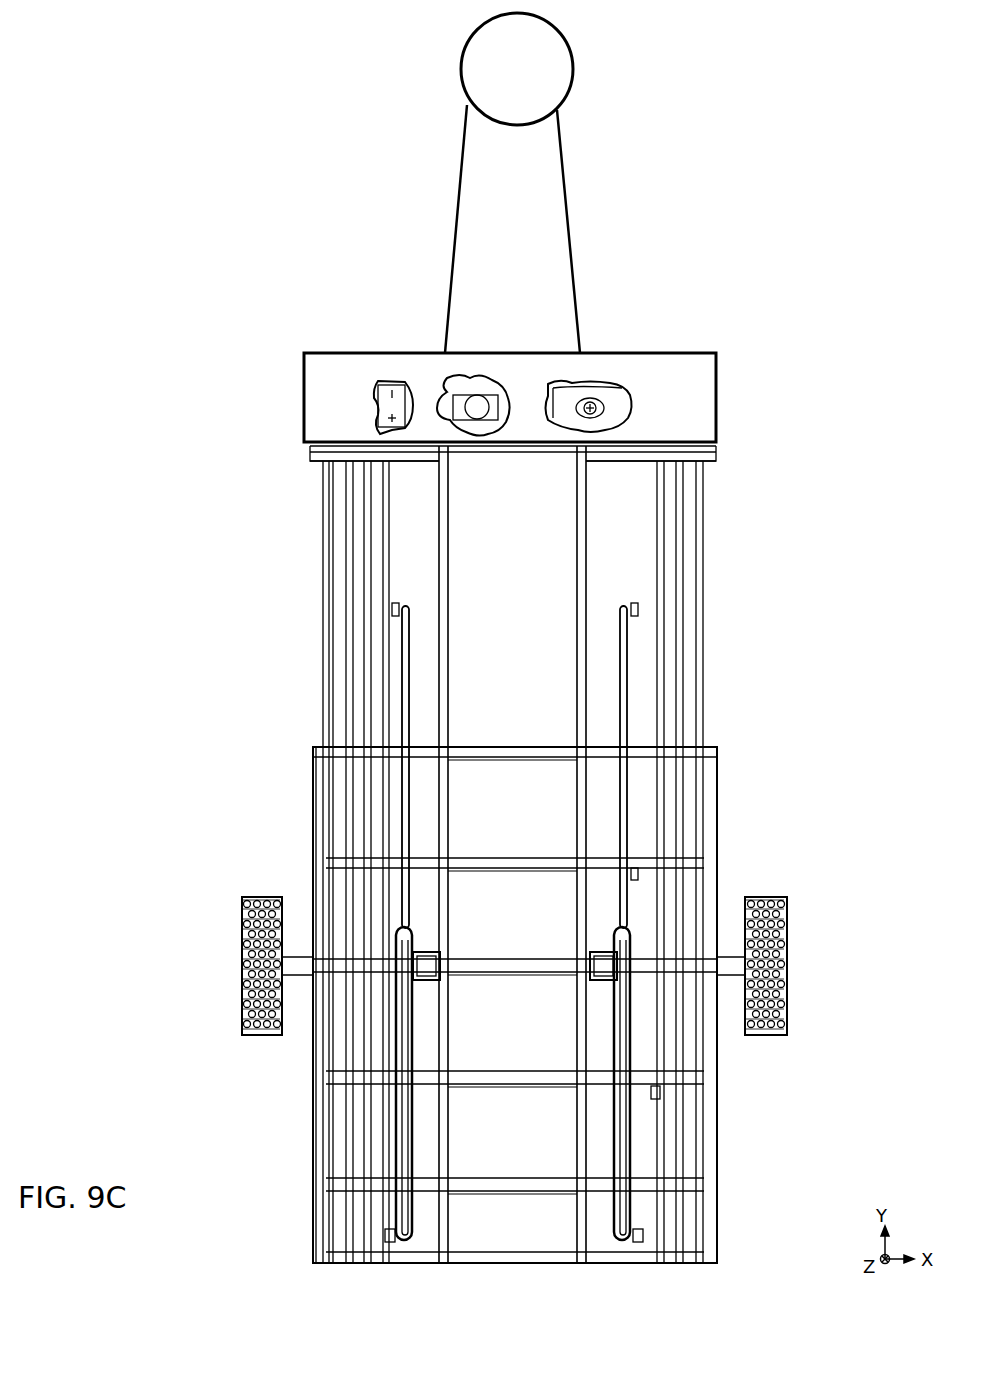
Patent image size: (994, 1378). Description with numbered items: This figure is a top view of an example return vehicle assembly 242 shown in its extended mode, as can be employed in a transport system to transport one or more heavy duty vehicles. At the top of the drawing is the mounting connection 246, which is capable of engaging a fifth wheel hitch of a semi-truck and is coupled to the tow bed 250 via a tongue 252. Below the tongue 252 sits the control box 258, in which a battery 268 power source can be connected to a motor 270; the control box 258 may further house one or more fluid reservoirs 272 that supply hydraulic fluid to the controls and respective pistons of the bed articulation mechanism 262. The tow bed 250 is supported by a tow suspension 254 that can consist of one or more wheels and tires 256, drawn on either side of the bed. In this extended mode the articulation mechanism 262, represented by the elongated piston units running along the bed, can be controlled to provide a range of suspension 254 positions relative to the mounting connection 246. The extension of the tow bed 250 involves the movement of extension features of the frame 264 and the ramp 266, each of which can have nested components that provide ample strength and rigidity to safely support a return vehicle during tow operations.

The return vehicle assembly 242 is at (194, 150).
The mounting connection 246 is at (499, 79).
The tongue 252 is at (494, 266).
The control box 258 is at (494, 378).
The battery 268 is at (366, 395).
The motor 270 is at (493, 433).
The fluid reservoir 272 is at (626, 400).
The tow bed 250 is at (705, 556).
The frame 264 is at (444, 552).
The bed articulation mechanism 262 is at (622, 1010).
The tow suspension 254 is at (275, 873).
The wheels and tires 256 is at (243, 908).
The ramp 266 is at (316, 1120).